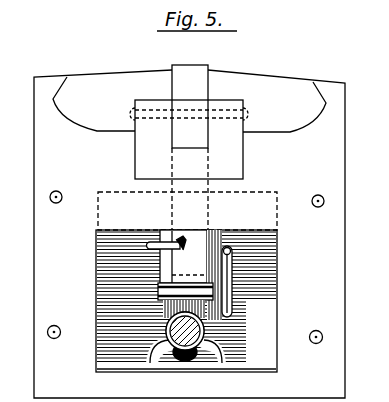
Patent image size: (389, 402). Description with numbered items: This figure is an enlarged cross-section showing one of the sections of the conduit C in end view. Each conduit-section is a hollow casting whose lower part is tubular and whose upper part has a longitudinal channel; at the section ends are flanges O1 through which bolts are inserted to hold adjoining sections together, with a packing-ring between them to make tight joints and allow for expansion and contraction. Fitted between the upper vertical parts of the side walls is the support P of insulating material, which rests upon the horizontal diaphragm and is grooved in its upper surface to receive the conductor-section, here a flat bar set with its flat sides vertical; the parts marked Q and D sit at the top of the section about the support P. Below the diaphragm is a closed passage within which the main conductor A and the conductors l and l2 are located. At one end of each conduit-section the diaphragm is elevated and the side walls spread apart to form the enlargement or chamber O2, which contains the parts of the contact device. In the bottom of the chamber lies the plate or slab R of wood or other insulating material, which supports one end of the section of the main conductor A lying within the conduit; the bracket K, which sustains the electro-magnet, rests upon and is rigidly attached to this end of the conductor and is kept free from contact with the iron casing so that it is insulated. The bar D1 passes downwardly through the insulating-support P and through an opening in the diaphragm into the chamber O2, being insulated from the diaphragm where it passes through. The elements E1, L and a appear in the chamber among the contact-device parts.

The conduit C is at (189, 222).
The curved guide pieces Q is at (189, 104).
The tab/arm D is at (190, 147).
The insulating support P is at (189, 139).
The chamber O2 is at (187, 257).
The end flanges O1 is at (182, 267).
The bar D1 is at (183, 256).
The conductor l is at (162, 250).
The cross bar E1 is at (180, 297).
The slot L is at (232, 252).
The conductor l2 is at (232, 276).
The bracket K is at (244, 322).
The bearing a is at (168, 336).
The main conductor A is at (170, 329).
The insulating plate R is at (143, 367).